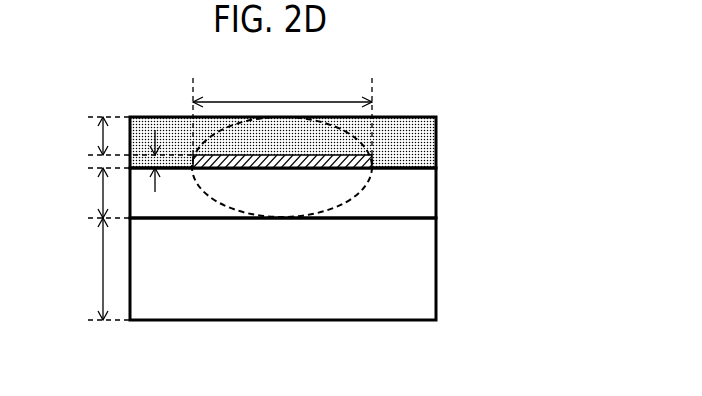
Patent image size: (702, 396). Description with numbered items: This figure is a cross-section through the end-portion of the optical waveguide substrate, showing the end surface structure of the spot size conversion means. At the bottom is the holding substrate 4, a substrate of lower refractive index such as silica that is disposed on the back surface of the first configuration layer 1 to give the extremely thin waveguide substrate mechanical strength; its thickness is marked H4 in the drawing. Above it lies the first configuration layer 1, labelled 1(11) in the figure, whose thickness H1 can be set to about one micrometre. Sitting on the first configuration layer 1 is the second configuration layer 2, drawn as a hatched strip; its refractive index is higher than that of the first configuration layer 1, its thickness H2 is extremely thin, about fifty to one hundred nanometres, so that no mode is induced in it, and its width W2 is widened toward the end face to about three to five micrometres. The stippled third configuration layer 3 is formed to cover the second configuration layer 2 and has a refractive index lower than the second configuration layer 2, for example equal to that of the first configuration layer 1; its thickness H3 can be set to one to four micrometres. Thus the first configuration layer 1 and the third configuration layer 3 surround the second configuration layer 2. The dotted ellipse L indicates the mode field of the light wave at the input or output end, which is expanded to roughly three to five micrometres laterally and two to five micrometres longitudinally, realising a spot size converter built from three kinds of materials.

The first configuration layer 1 is at (346, 191).
The substrate first surface region 11 is at (422, 197).
The second configuration layer 2 is at (290, 168).
The third configuration layer 3 is at (420, 140).
The holding substrate 4 is at (417, 270).
The light wave L is at (347, 200).
The width of second configuration layer W2 is at (282, 119).
The thickness of first configuration layer H1 is at (96, 193).
The thickness of second configuration layer H2 is at (170, 173).
The thickness of third configuration layer H3 is at (127, 136).
The height of layer 4 H4 is at (96, 269).